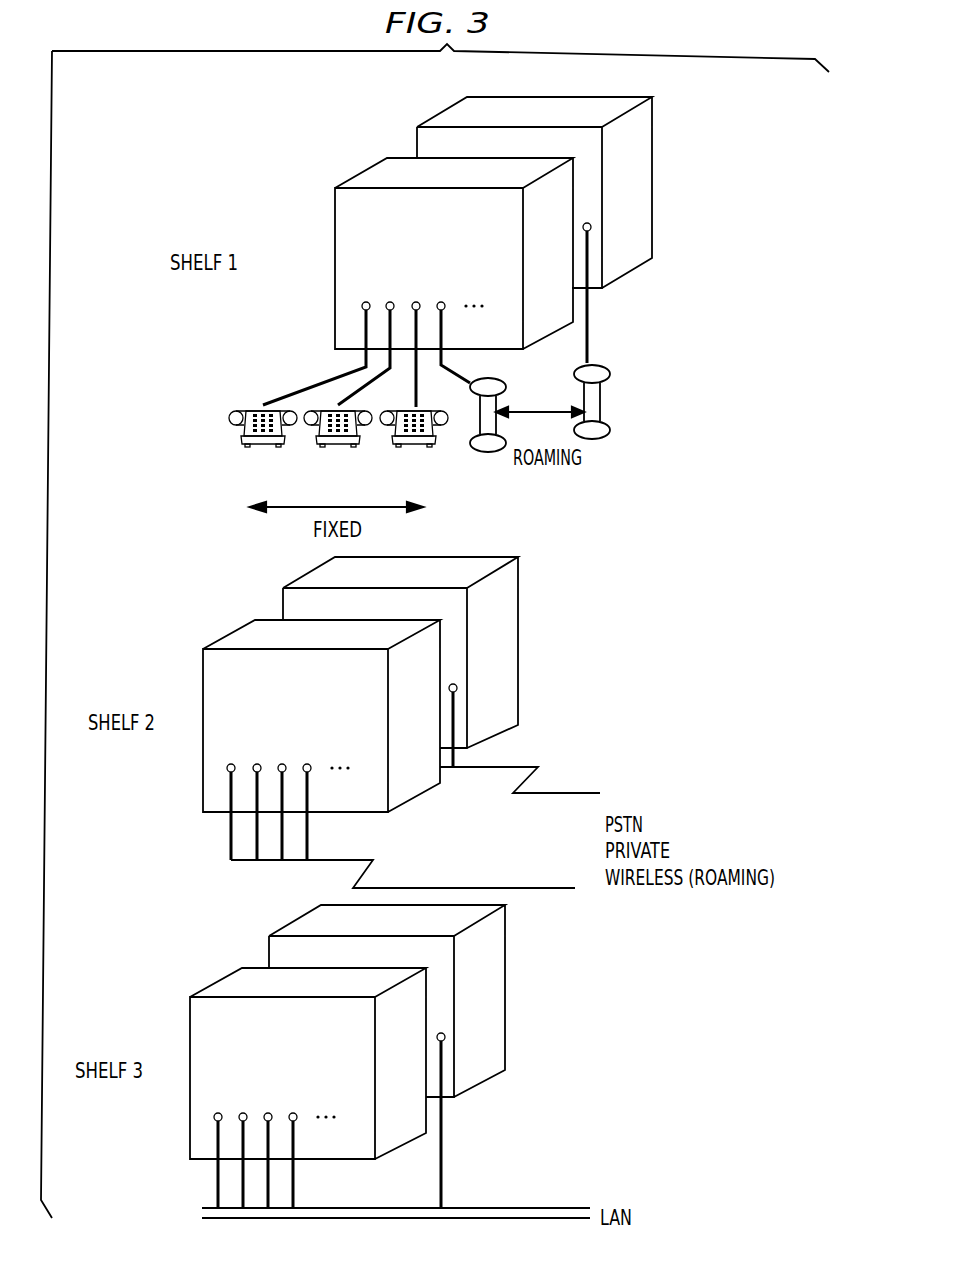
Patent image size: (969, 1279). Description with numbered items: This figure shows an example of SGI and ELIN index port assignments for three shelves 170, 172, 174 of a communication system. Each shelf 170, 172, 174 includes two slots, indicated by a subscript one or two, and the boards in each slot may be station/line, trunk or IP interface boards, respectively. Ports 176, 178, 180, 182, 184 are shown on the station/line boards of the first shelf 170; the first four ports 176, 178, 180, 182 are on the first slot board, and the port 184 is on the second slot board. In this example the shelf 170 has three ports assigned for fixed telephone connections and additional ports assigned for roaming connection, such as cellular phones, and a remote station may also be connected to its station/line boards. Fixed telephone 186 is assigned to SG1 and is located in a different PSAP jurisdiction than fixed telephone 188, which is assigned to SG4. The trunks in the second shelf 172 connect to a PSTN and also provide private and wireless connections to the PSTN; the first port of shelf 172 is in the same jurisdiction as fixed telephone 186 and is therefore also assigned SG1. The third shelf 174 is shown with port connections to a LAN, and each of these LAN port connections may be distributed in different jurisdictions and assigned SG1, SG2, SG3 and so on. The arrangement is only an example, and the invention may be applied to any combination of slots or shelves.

The shelf 170 is at (508, 211).
The shelf 172 is at (394, 722).
The shelf 174 is at (381, 1061).
The port 176 is at (362, 306).
The port 178 is at (388, 302).
The port 180 is at (417, 302).
The port 182 is at (445, 303).
The port 184 is at (591, 225).
The fixed telephone 186 is at (265, 448).
The fixed telephone 188 is at (340, 448).